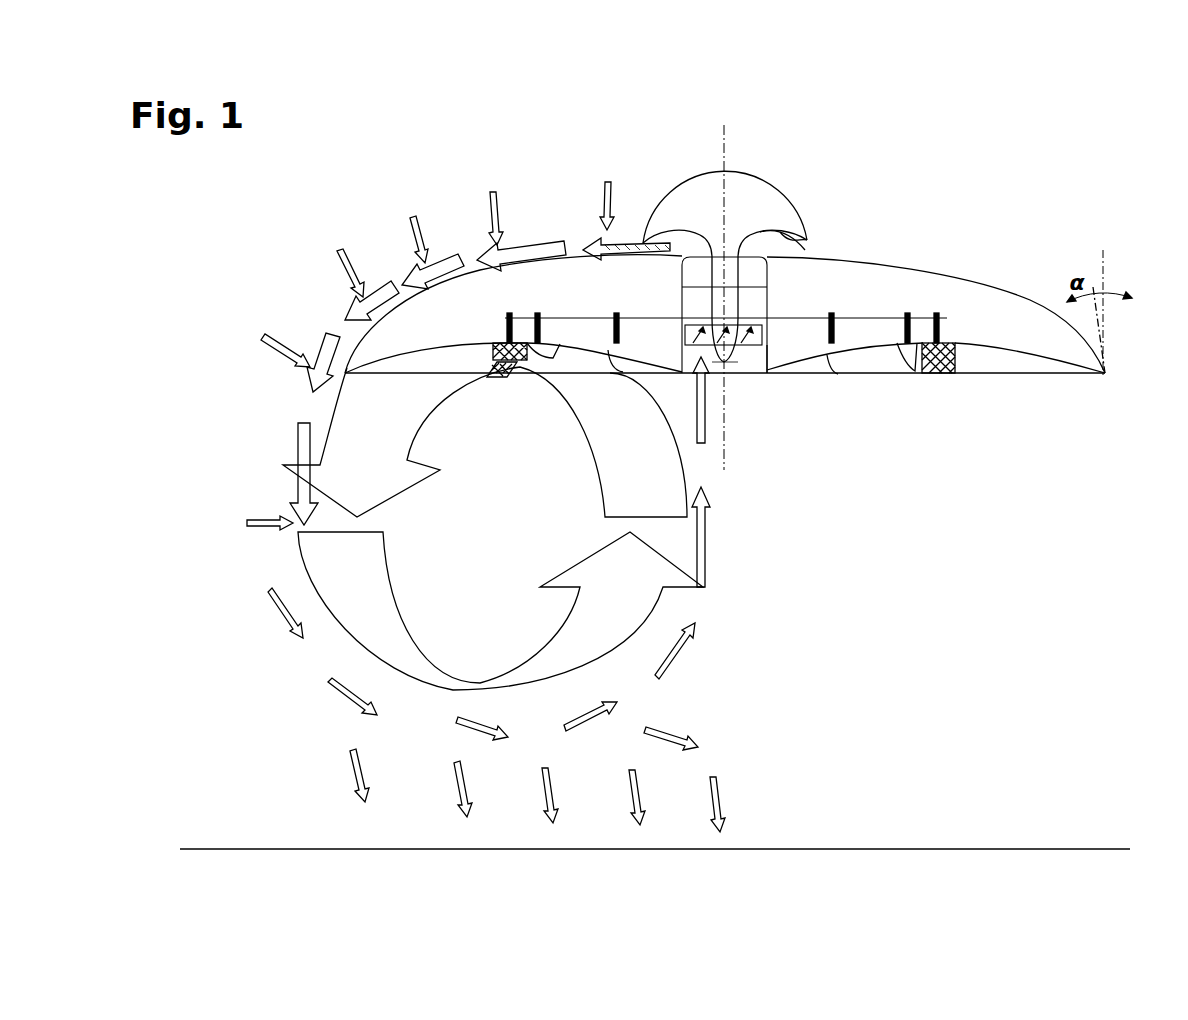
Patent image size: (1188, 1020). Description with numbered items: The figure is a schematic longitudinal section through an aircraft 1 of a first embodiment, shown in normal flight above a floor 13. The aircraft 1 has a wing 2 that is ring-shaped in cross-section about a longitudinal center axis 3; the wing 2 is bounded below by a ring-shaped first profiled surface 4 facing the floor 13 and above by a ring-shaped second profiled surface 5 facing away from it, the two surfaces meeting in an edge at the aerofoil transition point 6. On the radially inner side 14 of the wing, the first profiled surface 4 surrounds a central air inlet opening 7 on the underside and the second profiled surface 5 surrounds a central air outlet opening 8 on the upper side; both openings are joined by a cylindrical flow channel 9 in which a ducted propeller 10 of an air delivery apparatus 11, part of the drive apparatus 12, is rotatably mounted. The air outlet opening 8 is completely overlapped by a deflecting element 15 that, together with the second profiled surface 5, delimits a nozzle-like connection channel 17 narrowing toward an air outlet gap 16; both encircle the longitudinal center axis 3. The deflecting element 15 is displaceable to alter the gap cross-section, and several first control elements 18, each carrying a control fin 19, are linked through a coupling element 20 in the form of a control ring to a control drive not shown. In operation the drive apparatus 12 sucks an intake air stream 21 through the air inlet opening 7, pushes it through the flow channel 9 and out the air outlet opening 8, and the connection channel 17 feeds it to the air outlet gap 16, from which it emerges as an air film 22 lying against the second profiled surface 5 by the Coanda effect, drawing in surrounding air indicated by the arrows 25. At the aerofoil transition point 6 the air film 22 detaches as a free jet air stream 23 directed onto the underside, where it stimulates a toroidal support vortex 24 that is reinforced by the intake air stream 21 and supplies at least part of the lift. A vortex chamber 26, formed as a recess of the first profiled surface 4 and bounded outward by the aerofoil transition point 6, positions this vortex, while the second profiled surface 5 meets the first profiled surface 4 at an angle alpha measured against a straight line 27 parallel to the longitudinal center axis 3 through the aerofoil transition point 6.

The aircraft 1 is at (1005, 185).
The wing 2 is at (735, 300).
The longitudinal center axis 3 is at (727, 428).
The first profiled surface 4 is at (1058, 366).
The second profiled surface 5 is at (1035, 293).
The aerofoil transition point 6 is at (1105, 375).
The air inlet opening 7 is at (740, 375).
The air outlet opening 8 is at (757, 233).
The flow channel 9 is at (762, 273).
The ducted propeller 10 is at (771, 355).
The air delivery apparatus 11 is at (780, 360).
The drive apparatus 12 is at (760, 308).
The floor 13 is at (1018, 848).
The inner side 14 is at (680, 246).
The deflecting element 15 is at (702, 203).
The air outlet gap 16 is at (805, 250).
The connection channel 17 is at (780, 232).
The first control elements 18 is at (837, 362).
The control fin 19 is at (975, 375).
The coupling element 20 is at (878, 325).
The intake air stream 21 is at (712, 440).
The air film 22 is at (376, 283).
The free jet air stream 23 is at (295, 440).
The support vortex 24 is at (413, 668).
The arrows 25 is at (342, 250).
The vortex chamber 26 is at (1018, 362).
The straight line 27 is at (1108, 262).